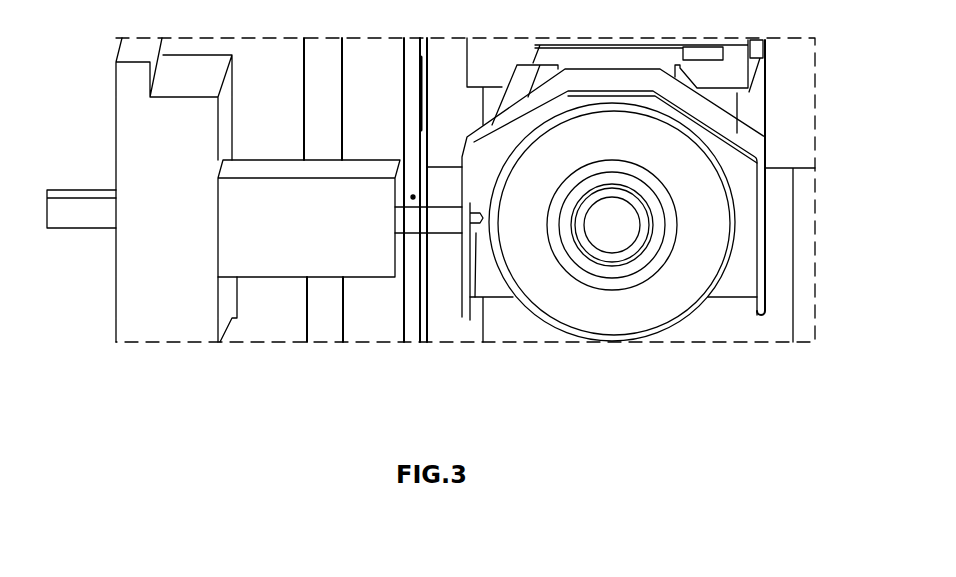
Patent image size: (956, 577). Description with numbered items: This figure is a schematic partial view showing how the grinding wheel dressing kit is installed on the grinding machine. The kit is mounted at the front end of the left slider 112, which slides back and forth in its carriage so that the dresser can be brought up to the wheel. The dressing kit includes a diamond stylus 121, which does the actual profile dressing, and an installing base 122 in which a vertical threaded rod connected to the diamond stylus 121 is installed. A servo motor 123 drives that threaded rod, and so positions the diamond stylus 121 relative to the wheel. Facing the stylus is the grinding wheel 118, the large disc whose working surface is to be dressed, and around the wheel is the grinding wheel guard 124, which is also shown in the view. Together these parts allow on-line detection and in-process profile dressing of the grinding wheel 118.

The left slider 112 is at (180, 300).
The grinding wheel 118 is at (613, 313).
The diamond stylus 121 is at (471, 317).
The installing base 122 is at (285, 256).
The servo motor 123 is at (78, 215).
The grinding wheel guard 124 is at (743, 133).